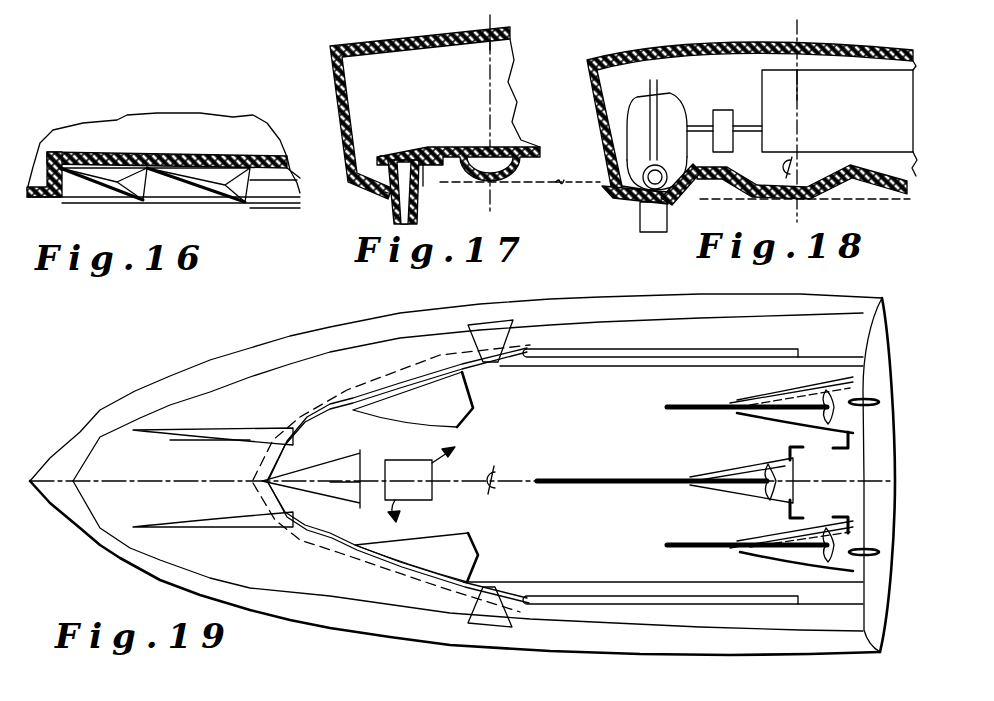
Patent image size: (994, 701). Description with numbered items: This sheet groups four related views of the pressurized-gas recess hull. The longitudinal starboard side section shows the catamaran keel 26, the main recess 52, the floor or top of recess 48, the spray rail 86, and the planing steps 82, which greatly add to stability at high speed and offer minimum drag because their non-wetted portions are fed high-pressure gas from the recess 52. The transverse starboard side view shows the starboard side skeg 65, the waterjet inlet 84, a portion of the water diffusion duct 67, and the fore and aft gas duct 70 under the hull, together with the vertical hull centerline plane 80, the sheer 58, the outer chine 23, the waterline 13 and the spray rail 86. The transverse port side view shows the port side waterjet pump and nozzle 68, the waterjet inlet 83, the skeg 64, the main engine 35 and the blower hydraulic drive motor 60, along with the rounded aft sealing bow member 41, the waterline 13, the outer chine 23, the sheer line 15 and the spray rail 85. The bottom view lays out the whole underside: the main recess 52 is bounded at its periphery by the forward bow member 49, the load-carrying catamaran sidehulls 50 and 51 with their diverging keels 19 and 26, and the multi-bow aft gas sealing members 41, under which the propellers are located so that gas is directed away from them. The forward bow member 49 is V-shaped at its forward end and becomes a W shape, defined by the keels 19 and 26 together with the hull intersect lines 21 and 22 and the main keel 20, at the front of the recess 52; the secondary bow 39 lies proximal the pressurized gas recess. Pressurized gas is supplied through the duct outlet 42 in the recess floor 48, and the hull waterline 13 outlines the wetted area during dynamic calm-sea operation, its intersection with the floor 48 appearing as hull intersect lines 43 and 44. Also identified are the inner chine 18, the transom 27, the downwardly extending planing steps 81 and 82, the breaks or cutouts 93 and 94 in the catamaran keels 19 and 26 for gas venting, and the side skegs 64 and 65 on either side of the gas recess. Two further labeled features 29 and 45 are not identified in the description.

In FIG. 17, the hull waterline 13 is at (517, 183).
In FIG. 18, the hull waterline 13 is at (600, 182).
In FIG. 19, the hull waterline 13 is at (770, 468).
In FIG. 18, the sheer line 15 is at (588, 58).
In FIG. 19, the sheer line 15 is at (205, 366).
In FIG. 19, the inner chine 18 is at (563, 320).
In FIG. 19, the catamaran sidehull keel 19 is at (262, 428).
In FIG. 19, the main keel 20 is at (103, 478).
In FIG. 19, the hull intersect line 21 is at (185, 447).
In FIG. 19, the hull intersect line 22 is at (175, 517).
In FIG. 18, the outer chine 23 is at (605, 196).
In FIG. 19, the outer chine 23 is at (737, 630).
In FIG. 16, the catamaran keel 26 is at (82, 200).
In FIG. 19, the catamaran keel 26 is at (262, 530).
In FIG. 19, the transom 27 is at (882, 445).
In FIG. 19, the transom edge 29 is at (887, 387).
In FIG. 18, the main engine 35 is at (882, 116).
In FIG. 19, the secondary bow 39 is at (345, 466).
In FIG. 18, the aft bow member 41 is at (832, 180).
In FIG. 19, the aft bow member 41 is at (760, 405).
In FIG. 19, the gas supply duct outlet 42 is at (420, 489).
In FIG. 19, the hull intersect line 43 is at (582, 370).
In FIG. 19, the hull intersect line 44 is at (563, 584).
In FIG. 19, the nose tip 45 is at (341, 505).
In FIG. 16, the recess floor 48 is at (128, 160).
In FIG. 19, the recess floor 48 is at (540, 454).
In FIG. 19, the forward bow member 49 is at (231, 478).
In FIG. 19, the catamaran sidehull 50 is at (332, 385).
In FIG. 19, the catamaran sidehull 51 is at (356, 587).
In FIG. 16, the main recess 52 is at (268, 178).
In FIG. 19, the main recess 52 is at (603, 433).
In FIG. 17, the sheer 58 is at (334, 40).
In FIG. 19, the sheer 58 is at (112, 562).
In FIG. 18, the blower hydraulic drive motor 60 is at (722, 108).
In FIG. 18, the port side skeg 64 is at (640, 222).
In FIG. 19, the port side skeg 64 is at (620, 350).
In FIG. 17, the starboard side skeg 65 is at (390, 205).
In FIG. 19, the starboard side skeg 65 is at (660, 606).
In FIG. 17, the water diffusion duct 67 is at (403, 157).
In FIG. 18, the waterjet pump and nozzle 68 is at (635, 128).
In FIG. 17, the fore and aft gas duct 70 is at (480, 178).
In FIG. 17, the vertical hull centerline plane 80 is at (486, 50).
In FIG. 18, the vertical hull centerline plane 80 is at (802, 80).
In FIG. 19, the planing step 81 is at (436, 403).
In FIG. 16, the planing step 82 is at (215, 195).
In FIG. 19, the planing step 82 is at (456, 571).
In FIG. 18, the waterjet inlet 83 is at (648, 232).
In FIG. 17, the waterjet inlet 84 is at (395, 228).
In FIG. 18, the spray rail 85 is at (690, 195).
In FIG. 16, the spray rail 86 is at (280, 203).
In FIG. 17, the spray rail 86 is at (422, 188).
In FIG. 19, the keel cutout 93 is at (503, 621).
In FIG. 19, the keel cutout 94 is at (503, 352).